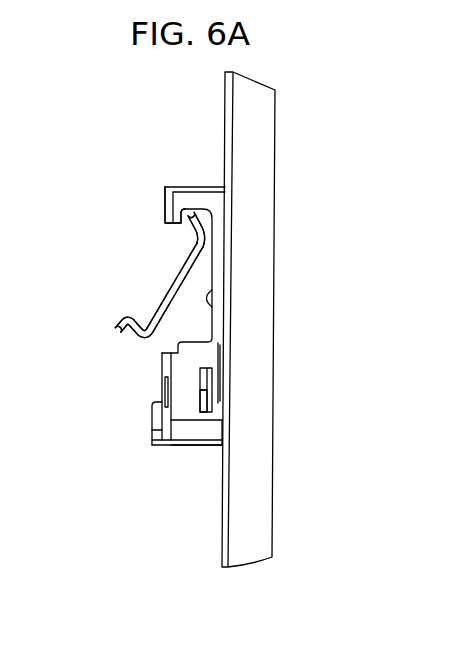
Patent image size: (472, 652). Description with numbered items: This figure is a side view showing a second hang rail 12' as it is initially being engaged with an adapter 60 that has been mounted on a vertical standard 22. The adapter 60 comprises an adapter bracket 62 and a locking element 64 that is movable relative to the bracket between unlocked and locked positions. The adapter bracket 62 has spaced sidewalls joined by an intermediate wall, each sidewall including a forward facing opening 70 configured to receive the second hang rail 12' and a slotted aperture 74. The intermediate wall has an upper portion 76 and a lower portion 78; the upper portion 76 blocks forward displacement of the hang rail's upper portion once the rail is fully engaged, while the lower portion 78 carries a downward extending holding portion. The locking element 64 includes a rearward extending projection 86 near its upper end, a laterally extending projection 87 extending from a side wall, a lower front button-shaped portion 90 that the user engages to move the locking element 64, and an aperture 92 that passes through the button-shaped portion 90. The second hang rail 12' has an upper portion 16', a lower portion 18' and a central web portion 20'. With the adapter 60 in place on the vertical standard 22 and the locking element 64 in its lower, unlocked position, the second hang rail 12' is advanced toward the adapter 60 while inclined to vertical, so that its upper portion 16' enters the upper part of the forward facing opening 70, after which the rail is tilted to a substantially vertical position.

The second hang rail 12' is at (224, 274).
The upper portion 16' is at (150, 236).
The lower portion 18' is at (110, 317).
The central web portion 20' is at (147, 287).
The vertical standard 22 is at (262, 470).
The adapter 60 is at (177, 483).
The adapter bracket 62 is at (201, 177).
The locking element 64 is at (145, 459).
The forward facing opening 70 is at (210, 305).
The slotted aperture 74 is at (222, 357).
The upper portion 76 is at (176, 226).
The lower portion 78 is at (160, 367).
The rearward extending projection 86 is at (216, 370).
The laterally extending projection 87 is at (213, 408).
The button-shaped portion 90 is at (153, 435).
The aperture 92 is at (153, 395).